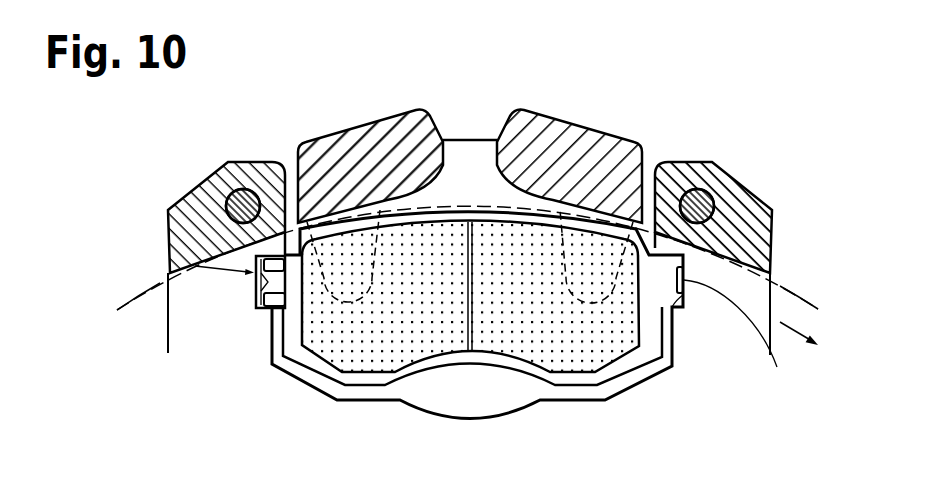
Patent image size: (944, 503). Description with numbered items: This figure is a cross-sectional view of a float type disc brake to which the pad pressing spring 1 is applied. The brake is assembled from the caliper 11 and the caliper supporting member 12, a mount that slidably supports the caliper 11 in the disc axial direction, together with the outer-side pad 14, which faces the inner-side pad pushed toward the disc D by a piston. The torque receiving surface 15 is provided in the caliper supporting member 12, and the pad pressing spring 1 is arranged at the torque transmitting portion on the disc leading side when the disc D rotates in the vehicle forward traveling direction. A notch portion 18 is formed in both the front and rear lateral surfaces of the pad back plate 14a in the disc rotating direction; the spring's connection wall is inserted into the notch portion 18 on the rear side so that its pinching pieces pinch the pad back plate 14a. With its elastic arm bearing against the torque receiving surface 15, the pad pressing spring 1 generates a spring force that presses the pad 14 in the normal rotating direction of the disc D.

The pad pressing spring 1 is at (168, 212).
The caliper 11 is at (583, 150).
The caliper supporting member 12 is at (743, 202).
The outer-side pad 14 is at (517, 360).
The pad back plate 14a is at (634, 360).
The torque receiving surface 15 is at (267, 309).
The notch portion 18 is at (737, 337).
The disc D is at (800, 300).